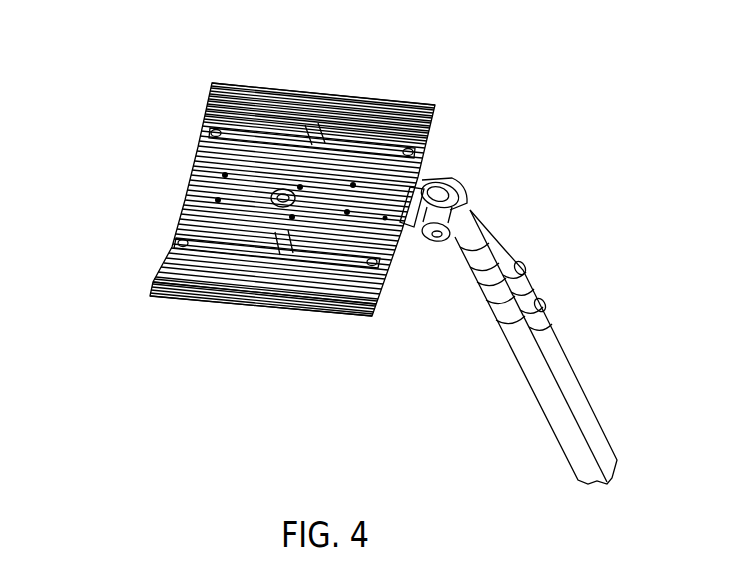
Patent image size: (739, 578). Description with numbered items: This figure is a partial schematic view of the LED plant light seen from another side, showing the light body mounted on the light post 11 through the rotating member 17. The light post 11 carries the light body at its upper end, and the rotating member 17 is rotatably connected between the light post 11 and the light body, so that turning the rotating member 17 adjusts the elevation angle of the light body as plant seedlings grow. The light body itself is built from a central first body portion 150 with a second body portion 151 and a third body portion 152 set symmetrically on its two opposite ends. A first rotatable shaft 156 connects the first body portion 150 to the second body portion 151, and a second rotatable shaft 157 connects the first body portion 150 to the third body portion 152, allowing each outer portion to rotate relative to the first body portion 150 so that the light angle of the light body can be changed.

The light post 11 is at (521, 363).
The rotating member 17 is at (466, 197).
The first body portion 150 is at (192, 173).
The second body portion 151 is at (225, 84).
The third body portion 152 is at (157, 283).
The first rotatable shaft 156 is at (207, 127).
The second rotatable shaft 157 is at (172, 247).